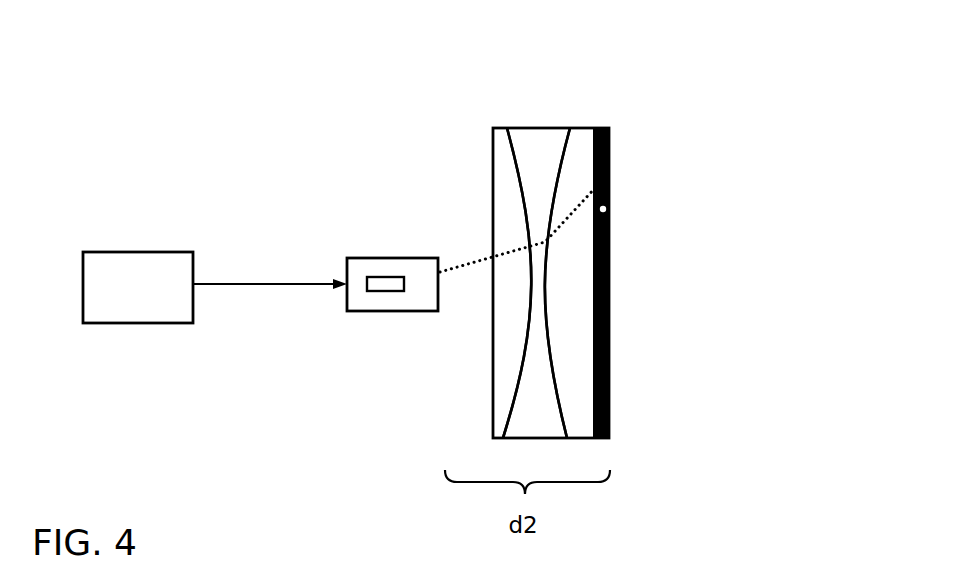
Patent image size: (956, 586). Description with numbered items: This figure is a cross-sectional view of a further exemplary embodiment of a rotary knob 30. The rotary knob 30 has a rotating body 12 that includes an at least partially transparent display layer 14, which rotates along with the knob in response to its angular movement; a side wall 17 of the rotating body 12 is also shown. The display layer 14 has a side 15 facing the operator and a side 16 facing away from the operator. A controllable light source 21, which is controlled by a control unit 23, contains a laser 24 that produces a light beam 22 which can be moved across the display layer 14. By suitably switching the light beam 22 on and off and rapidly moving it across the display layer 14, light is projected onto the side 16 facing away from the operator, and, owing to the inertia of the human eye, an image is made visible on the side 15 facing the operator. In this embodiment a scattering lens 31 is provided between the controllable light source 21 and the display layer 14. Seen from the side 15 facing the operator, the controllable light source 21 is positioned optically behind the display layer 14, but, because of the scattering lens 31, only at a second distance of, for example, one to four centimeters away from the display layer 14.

The rotating body 12 is at (579, 146).
The display layer 14 is at (606, 207).
The side facing an operator 15 is at (611, 303).
The side facing away from the operator 16 is at (592, 342).
The side wall 17 is at (521, 127).
The controllable light source 21 is at (391, 258).
The light beam 22 is at (468, 265).
The control unit 23 is at (133, 252).
The laser 24 is at (380, 283).
The rotary knob 30 is at (652, 95).
The scattering lens 31 is at (540, 406).